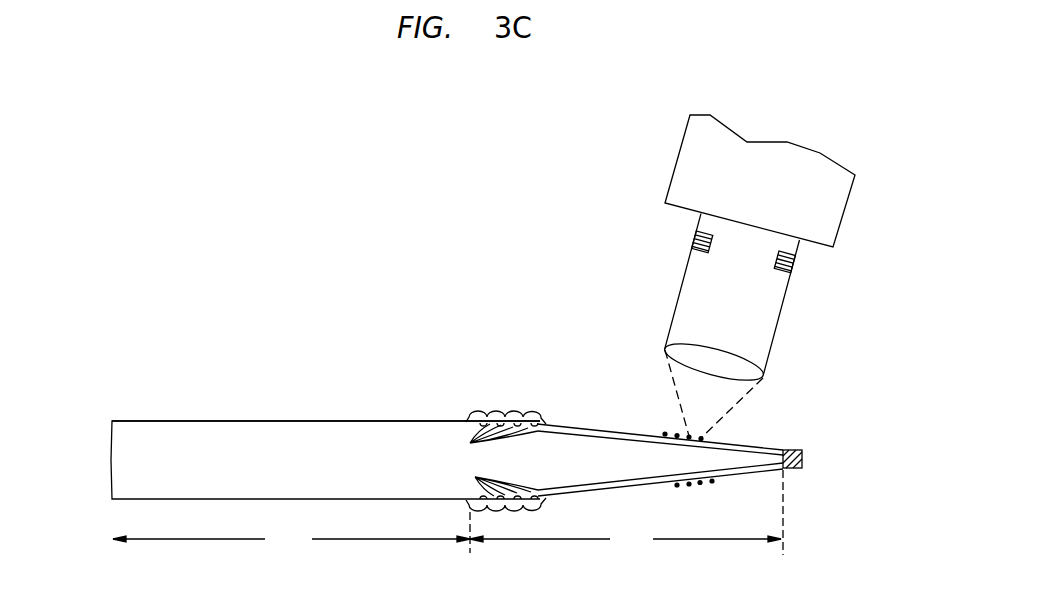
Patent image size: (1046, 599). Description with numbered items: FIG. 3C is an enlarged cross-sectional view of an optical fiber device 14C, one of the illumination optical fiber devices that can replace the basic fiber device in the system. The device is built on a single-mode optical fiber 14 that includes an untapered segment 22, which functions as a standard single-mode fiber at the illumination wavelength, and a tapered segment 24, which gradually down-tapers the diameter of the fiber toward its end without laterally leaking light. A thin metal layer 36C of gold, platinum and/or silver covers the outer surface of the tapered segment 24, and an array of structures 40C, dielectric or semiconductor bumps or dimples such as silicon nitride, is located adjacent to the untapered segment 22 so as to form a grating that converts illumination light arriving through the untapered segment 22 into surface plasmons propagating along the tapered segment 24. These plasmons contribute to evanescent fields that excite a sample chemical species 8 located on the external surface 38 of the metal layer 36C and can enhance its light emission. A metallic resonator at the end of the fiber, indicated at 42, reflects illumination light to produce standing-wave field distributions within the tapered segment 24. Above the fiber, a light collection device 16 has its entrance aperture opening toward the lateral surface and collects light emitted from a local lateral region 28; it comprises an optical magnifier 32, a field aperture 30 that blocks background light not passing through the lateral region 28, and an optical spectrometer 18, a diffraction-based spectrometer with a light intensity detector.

The sample chemical species 8 is at (670, 432).
The optical fiber 14 is at (84, 422).
The optical fiber device 14C is at (316, 392).
The light collection device 16 is at (682, 296).
The optical spectrometer 18 is at (777, 193).
The untapered segment 22 is at (291, 534).
The tapered segment 24 is at (626, 513).
The local lateral region 28 is at (746, 397).
The field aperture 30 is at (779, 258).
The optical magnifier 32 is at (727, 357).
The metal layer 36C is at (484, 414).
The external surface 38 is at (592, 426).
The array of structures 40C is at (481, 460).
The tip 42 is at (805, 460).